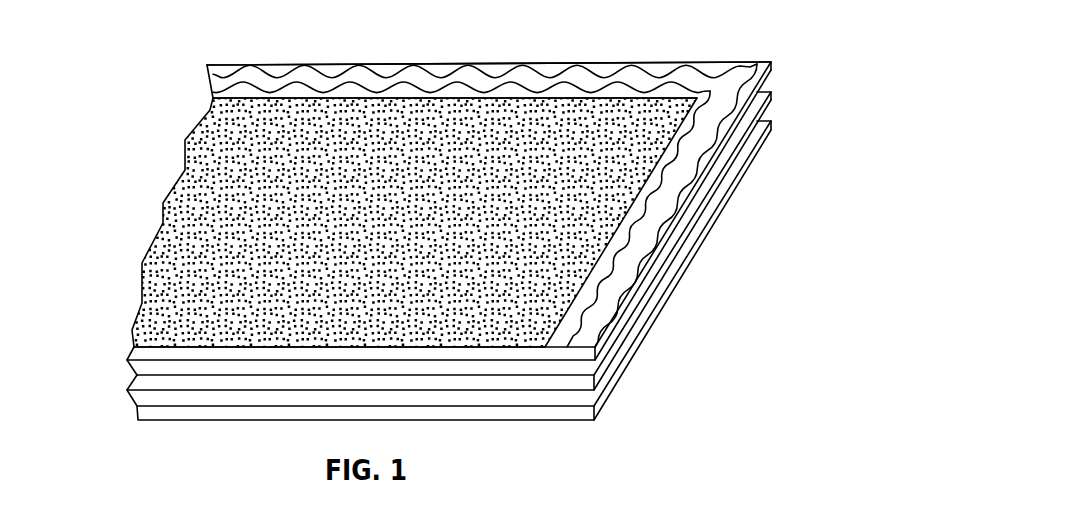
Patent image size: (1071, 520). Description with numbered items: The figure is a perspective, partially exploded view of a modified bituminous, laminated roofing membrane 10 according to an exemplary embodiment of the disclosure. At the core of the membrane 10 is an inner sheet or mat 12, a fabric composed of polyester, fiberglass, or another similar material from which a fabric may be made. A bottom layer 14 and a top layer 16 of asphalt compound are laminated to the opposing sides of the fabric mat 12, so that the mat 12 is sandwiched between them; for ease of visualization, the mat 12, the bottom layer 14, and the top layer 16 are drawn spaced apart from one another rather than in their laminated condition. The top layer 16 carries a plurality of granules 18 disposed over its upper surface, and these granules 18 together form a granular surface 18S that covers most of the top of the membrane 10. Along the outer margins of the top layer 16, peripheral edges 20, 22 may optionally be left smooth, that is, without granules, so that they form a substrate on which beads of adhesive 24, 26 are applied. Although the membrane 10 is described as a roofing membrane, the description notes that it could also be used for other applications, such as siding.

The roofing membrane 10 is at (108, 45).
The inner sheet or mat 12 is at (172, 383).
The bottom layer 14 is at (557, 412).
The top layer 16 is at (772, 67).
The granules 18 is at (157, 263).
The granular surface 18S is at (430, 217).
The peripheral edge 20 is at (723, 68).
The peripheral edge 22 is at (745, 90).
The bead of adhesive 24 is at (475, 70).
The bead of adhesive 26 is at (523, 84).